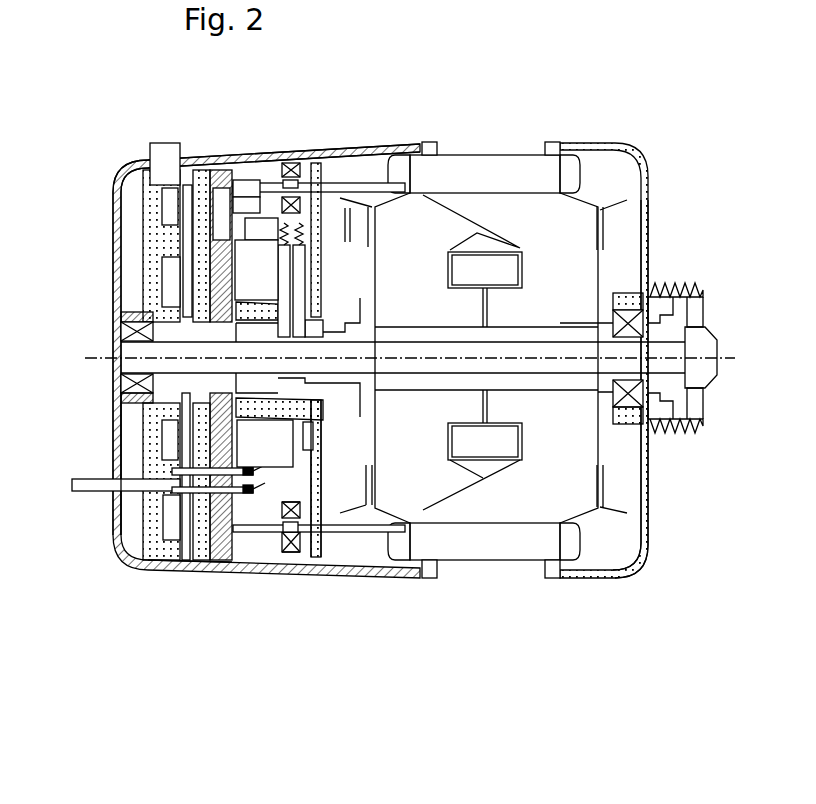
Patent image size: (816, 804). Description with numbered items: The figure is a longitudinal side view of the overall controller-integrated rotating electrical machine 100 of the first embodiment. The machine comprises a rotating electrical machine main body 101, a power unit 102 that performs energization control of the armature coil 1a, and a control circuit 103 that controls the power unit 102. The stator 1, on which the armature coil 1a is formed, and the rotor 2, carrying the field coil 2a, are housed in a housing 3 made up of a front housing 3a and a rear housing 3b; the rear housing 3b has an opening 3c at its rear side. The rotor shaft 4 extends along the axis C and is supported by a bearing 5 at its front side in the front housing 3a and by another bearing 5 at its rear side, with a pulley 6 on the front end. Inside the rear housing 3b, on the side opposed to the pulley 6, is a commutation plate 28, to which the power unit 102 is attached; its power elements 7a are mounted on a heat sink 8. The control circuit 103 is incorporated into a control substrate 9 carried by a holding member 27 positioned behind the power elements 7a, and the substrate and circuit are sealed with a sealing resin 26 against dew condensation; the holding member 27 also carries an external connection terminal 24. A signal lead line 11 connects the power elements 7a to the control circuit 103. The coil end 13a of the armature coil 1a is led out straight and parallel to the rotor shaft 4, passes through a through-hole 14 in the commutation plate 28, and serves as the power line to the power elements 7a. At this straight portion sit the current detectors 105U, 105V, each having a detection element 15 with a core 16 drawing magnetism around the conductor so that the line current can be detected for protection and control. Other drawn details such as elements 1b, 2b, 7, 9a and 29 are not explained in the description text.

The stator 1 is at (478, 152).
The armature coil 1a is at (587, 152).
The coil end plate 1b is at (520, 157).
The rotor 2 is at (537, 560).
The field coil 2a is at (500, 438).
The rotor housing corner 2b is at (643, 560).
The housing 3 is at (320, 156).
The front housing 3a is at (650, 210).
The rear housing 3b is at (355, 155).
The opening 3c is at (127, 160).
The rotor shaft 4 is at (490, 503).
The bearing 5 is at (121, 330).
The pulley 6 is at (703, 290).
The connector pin 7 is at (345, 242).
The power elements 7a is at (193, 573).
The heat sink 8 is at (227, 570).
The control substrate 9 is at (180, 432).
The lever arm 9a is at (183, 425).
The signal lead line 11 is at (110, 558).
The coil end 13a is at (378, 145).
The through-hole 14 is at (332, 560).
The detection element 15 is at (253, 560).
The core 16 is at (305, 560).
The external connection terminal 24 is at (85, 493).
The sealing resin 26 is at (153, 220).
The holding member 27 is at (190, 158).
The commutation plate 28 is at (302, 157).
The yoke 29 is at (153, 400).
The controller-integrated rotating electrical machine 100 is at (417, 140).
The rotating electrical machine main body 101 is at (660, 140).
The power unit 102 is at (110, 610).
The control circuit 103 is at (153, 293).
The current detector 105U is at (287, 560).
The current detector 105V is at (265, 158).
The axis C is at (424, 360).